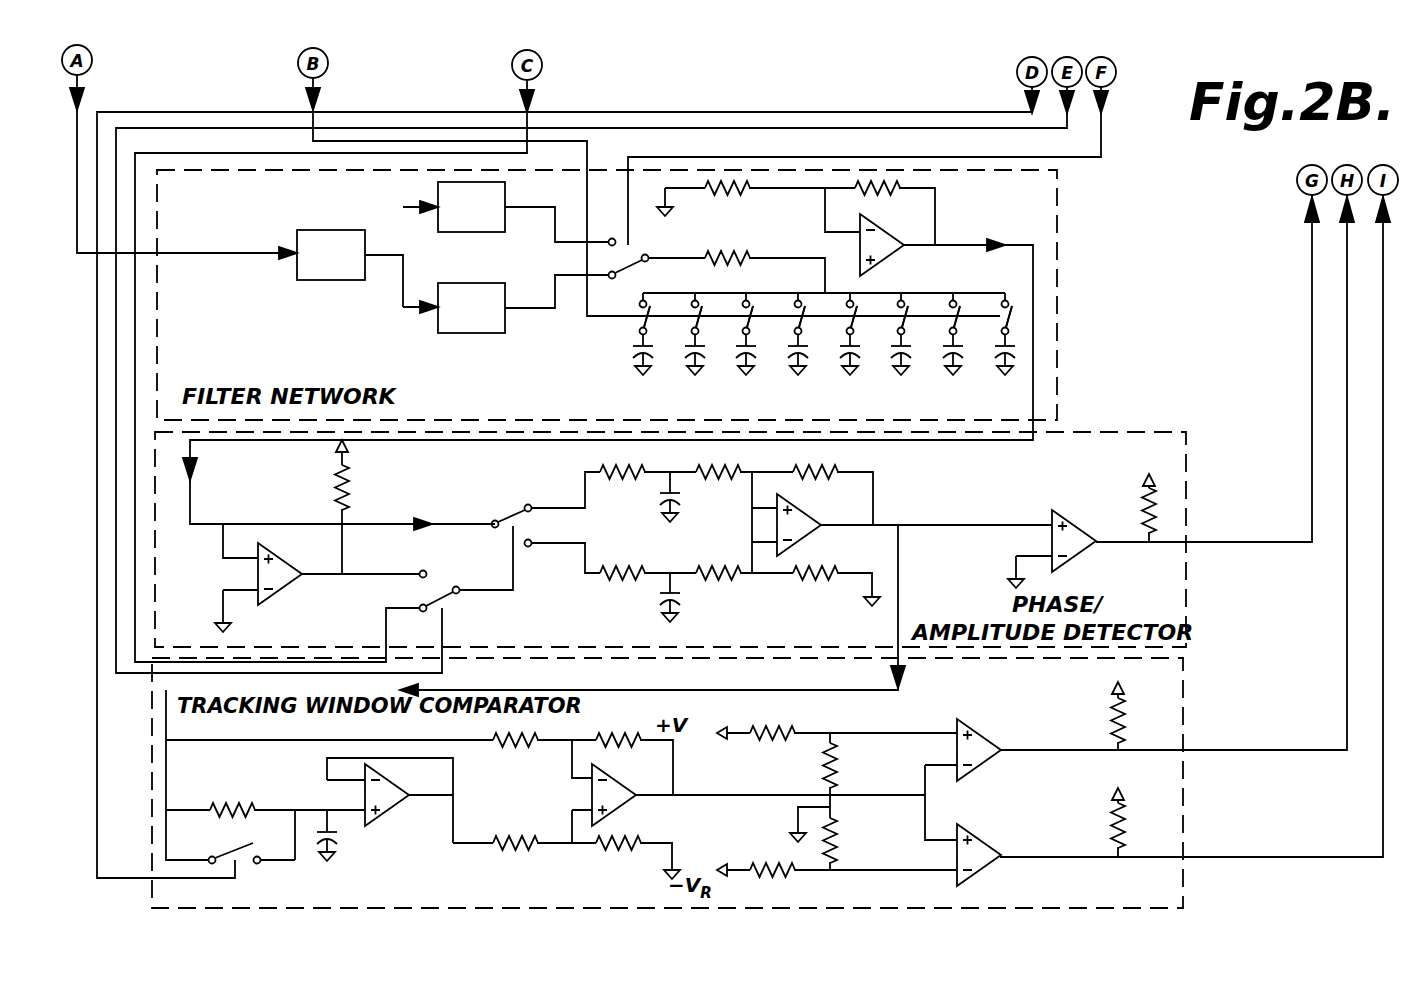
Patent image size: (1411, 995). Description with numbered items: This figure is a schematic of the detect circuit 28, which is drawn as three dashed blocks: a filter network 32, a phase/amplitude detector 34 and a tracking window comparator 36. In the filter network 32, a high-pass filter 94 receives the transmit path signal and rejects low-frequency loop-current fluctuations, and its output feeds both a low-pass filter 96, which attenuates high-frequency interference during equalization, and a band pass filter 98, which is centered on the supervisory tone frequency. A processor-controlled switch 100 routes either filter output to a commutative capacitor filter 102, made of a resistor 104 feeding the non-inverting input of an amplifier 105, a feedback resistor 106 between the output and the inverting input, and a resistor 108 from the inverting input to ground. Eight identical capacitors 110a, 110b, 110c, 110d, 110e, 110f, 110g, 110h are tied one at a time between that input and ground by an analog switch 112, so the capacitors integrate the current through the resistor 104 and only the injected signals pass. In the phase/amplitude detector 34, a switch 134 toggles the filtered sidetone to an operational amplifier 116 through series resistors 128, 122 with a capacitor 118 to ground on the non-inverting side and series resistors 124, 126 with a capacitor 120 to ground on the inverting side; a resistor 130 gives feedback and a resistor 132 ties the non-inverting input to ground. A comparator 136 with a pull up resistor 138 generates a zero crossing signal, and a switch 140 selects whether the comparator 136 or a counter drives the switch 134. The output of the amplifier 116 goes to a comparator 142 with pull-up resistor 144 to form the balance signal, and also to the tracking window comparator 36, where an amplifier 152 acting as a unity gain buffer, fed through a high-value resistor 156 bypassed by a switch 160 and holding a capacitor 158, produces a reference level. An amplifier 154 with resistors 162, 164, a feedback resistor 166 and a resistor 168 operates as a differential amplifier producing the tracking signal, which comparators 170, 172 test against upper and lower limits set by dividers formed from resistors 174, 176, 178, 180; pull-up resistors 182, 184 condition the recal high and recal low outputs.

The detect circuit 28 is at (1128, 264).
The filter network 32 is at (1060, 182).
The phase/amplitude detector 34 is at (1186, 455).
The tracking window comparator 36 is at (1183, 705).
The high-pass filter 94 is at (297, 272).
The low-pass filter 96 is at (438, 325).
The band pass filter 98 is at (438, 192).
The processor-controlled switch 100 is at (625, 266).
The commutative capacitor filter 102 is at (955, 235).
The resistor 104 is at (750, 256).
The amplifier 105 is at (888, 252).
The resistor 106 is at (900, 182).
The resistor 108 is at (750, 190).
The capacitor 110a is at (637, 352).
The capacitor 110b is at (688, 360).
The capacitor 110c is at (742, 360).
The capacitor 110d is at (800, 360).
The capacitor 110e is at (858, 360).
The capacitor 110f is at (910, 360).
The capacitor 110g is at (963, 360).
The capacitor 110h is at (1020, 351).
The analog switch 112 is at (745, 322).
The operational amplifier 116 is at (808, 536).
The capacitor 118 is at (662, 602).
The capacitor 120 is at (664, 500).
The resistor 122 is at (730, 579).
The resistor 124 is at (608, 468).
The resistor 126 is at (726, 478).
The resistor 128 is at (608, 578).
The resistor 130 is at (830, 470).
The resistor 132 is at (820, 579).
The processor-controlled switch 134 is at (515, 505).
The comparator 136 is at (285, 582).
The pull up resistor 138 is at (348, 490).
The processor-controlled switch 140 is at (445, 598).
The comparator 142 is at (1085, 552).
The pull-up resistor 144 is at (1142, 505).
The amplifier 152 is at (385, 810).
The amplifier 154 is at (636, 806).
The resistor 156 is at (235, 803).
The capacitor 158 is at (337, 844).
The processor-controlled switch 160 is at (238, 864).
The resistor 162 is at (515, 749).
The resistor 164 is at (515, 852).
The feedback resistor 166 is at (630, 733).
The resistor 168 is at (618, 852).
The comparator 170 is at (983, 764).
The comparator 172 is at (983, 870).
The resistor 174 is at (838, 758).
The resistor 176 is at (838, 833).
The resistor 178 is at (775, 741).
The resistor 180 is at (765, 863).
The pull-up resistor 182 is at (1110, 722).
The pull-up resistor 184 is at (1110, 828).